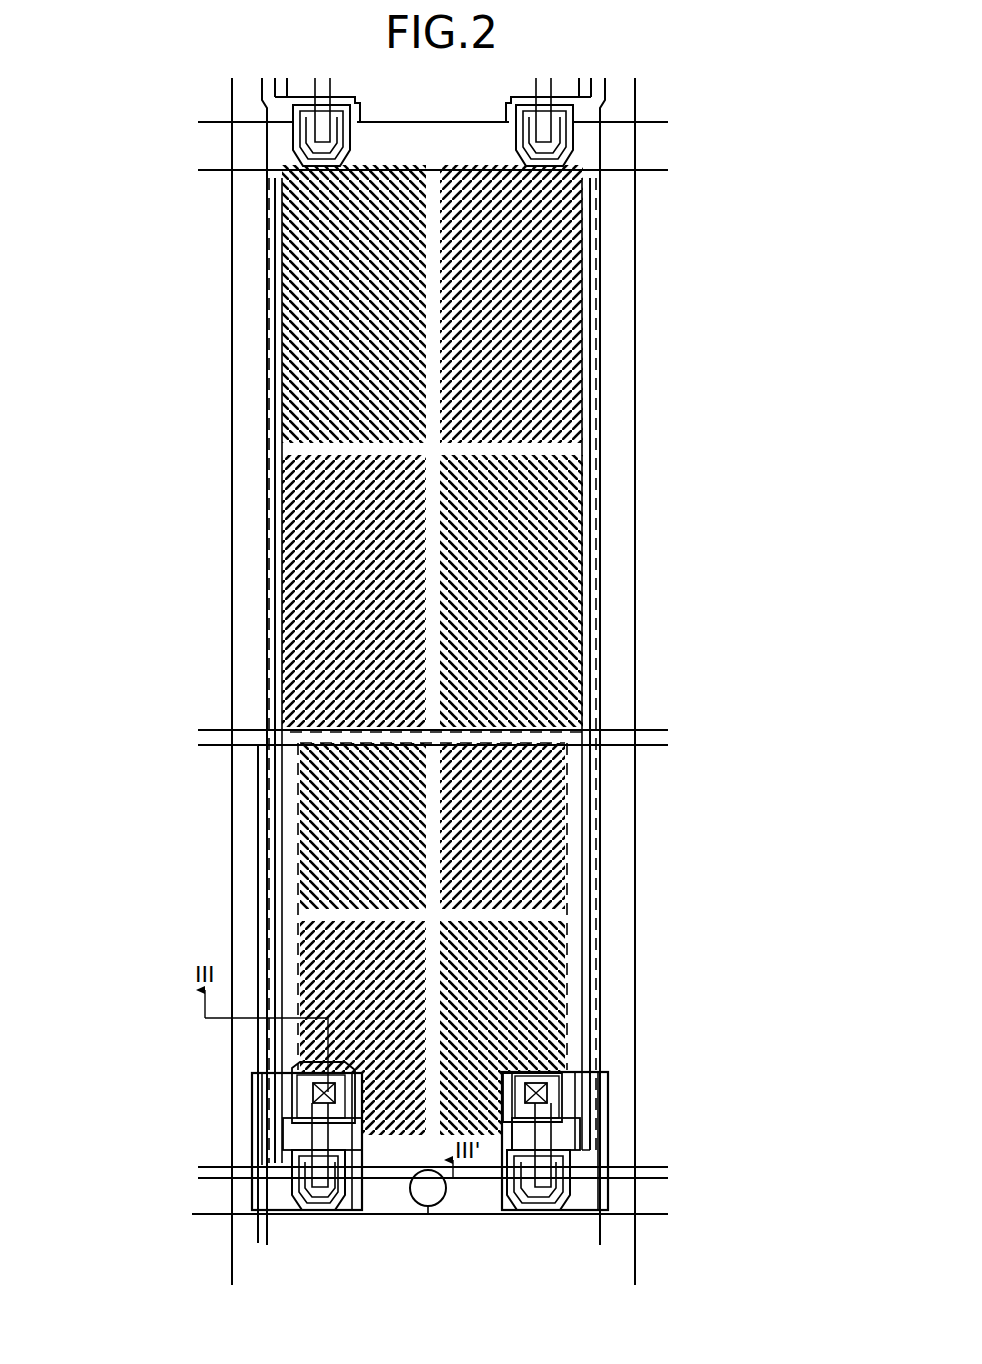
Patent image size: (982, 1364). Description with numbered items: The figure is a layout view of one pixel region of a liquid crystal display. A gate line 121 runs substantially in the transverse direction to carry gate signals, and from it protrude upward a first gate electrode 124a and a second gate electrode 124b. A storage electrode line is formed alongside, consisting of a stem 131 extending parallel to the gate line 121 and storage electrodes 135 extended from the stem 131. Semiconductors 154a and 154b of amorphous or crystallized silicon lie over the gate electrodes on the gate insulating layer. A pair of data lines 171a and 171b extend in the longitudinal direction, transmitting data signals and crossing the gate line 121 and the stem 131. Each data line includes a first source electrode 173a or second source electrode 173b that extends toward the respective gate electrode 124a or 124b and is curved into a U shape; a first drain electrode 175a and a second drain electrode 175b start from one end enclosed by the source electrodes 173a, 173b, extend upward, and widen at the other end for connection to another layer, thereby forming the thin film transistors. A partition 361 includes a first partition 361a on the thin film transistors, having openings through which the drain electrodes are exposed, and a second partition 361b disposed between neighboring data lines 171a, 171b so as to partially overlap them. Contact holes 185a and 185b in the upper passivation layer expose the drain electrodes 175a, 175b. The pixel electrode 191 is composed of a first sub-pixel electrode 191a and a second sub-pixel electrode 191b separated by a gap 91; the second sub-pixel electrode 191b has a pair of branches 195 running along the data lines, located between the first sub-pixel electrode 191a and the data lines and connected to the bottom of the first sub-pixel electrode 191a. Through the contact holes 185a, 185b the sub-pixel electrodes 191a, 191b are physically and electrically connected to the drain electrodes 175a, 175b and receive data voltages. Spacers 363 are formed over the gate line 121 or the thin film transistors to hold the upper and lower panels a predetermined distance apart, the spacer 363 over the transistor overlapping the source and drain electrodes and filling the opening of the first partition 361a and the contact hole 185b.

The gap 91 is at (296, 815).
The gate line 121 is at (642, 1166).
The first gate electrode 124a is at (505, 1150).
The second gate electrode 124b is at (358, 1150).
The stem of storage electrode line 131 is at (640, 722).
The storage electrode 135 is at (270, 777).
The semiconductor 154a is at (555, 1214).
The first semiconductor 154b is at (308, 1214).
The data line 171a is at (598, 943).
The data line 171b is at (277, 877).
The first source electrode 173a is at (535, 1190).
The second source electrode 173b is at (340, 1190).
The first drain electrode 175a is at (565, 1132).
The second drain electrode 175b is at (300, 1092).
The contact hole 185a is at (547, 1093).
The contact hole 185b is at (318, 1093).
The pixel electrode 191 is at (784, 586).
The first sub-pixel electrode 191a is at (555, 830).
The second sub-pixel electrode 191b is at (600, 432).
The branch 195 is at (277, 931).
The partition 361 is at (92, 462).
The first partition 361a is at (388, 1217).
The second partition 361b is at (266, 266).
The spacer 363 is at (255, 1150).